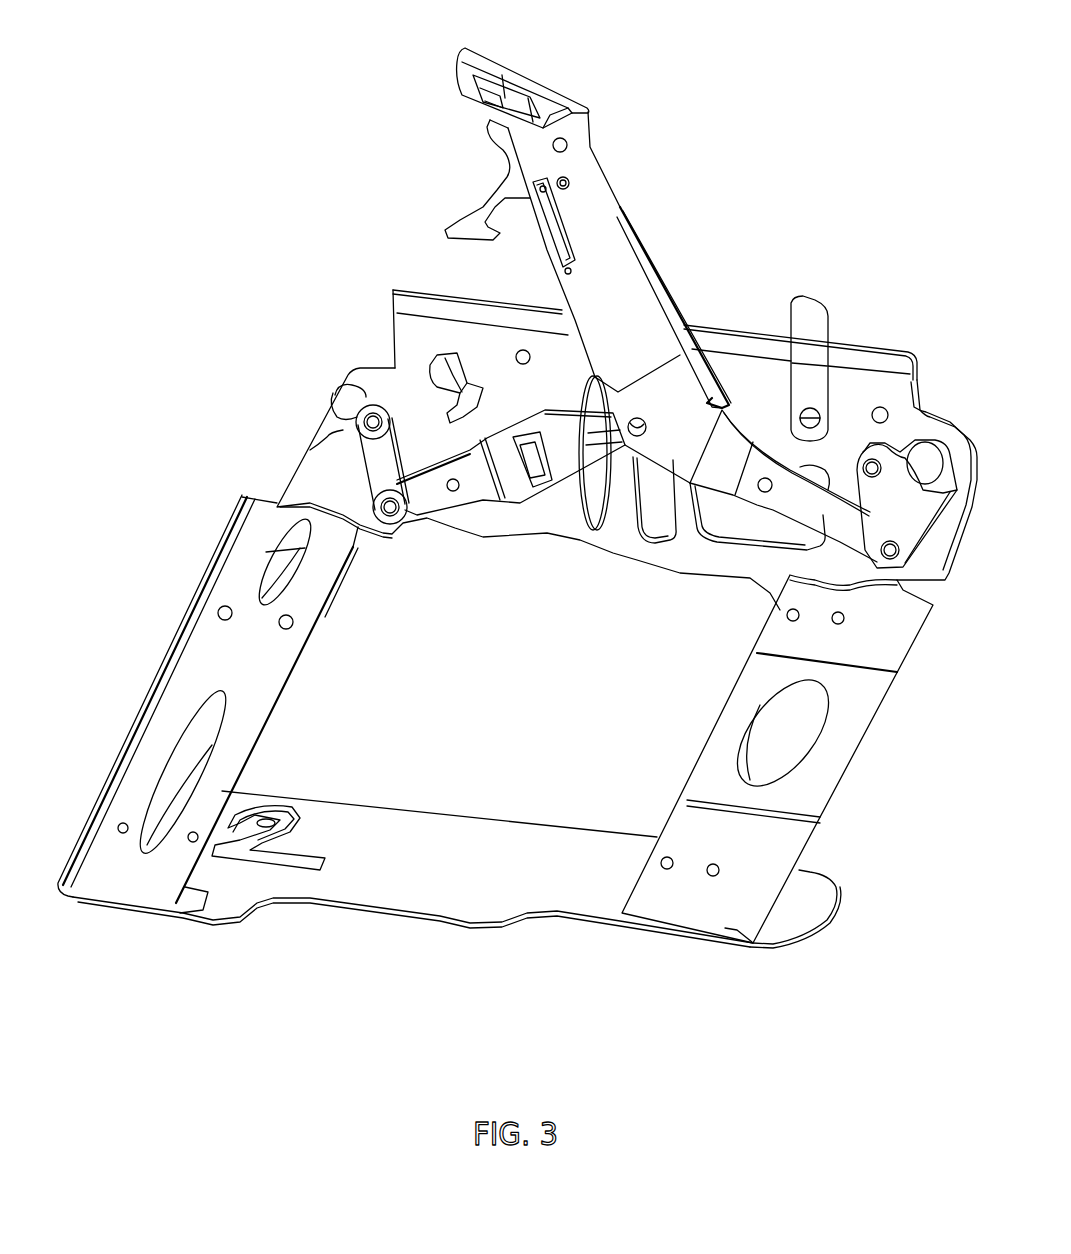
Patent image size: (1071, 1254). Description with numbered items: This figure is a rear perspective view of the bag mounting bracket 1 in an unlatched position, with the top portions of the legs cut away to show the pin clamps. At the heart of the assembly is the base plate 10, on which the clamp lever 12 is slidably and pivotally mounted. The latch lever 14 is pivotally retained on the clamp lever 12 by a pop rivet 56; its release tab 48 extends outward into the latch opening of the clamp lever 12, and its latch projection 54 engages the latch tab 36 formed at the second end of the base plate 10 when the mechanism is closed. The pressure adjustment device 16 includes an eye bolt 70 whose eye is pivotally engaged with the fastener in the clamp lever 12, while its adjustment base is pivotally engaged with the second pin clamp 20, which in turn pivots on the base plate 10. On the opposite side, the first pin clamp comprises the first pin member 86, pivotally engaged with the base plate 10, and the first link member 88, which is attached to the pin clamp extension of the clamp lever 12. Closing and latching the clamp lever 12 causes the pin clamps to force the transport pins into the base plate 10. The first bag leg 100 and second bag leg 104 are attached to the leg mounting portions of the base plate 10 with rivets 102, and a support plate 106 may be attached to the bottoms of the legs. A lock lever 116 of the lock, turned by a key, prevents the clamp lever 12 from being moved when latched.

The bag mounting bracket 1 is at (707, 92).
The base plate 10 is at (370, 223).
The clamp lever 12 is at (687, 233).
The latch lever 14 is at (476, 165).
The pressure adjustment device 16 is at (542, 503).
The second pin clamp 20 is at (357, 370).
The latch tab 36 is at (433, 358).
The release tab 48 is at (478, 86).
The latch projection 54 is at (463, 180).
The pop rivet 56 is at (568, 143).
The eye bolt 70 is at (600, 440).
The first pin member 86 is at (968, 442).
The first link member 88 is at (807, 463).
The first bag leg 100 is at (845, 757).
The rivets 102 is at (293, 622).
The second bag leg 104 is at (268, 688).
The support plate 106 is at (472, 828).
The lock lever 116 is at (822, 312).